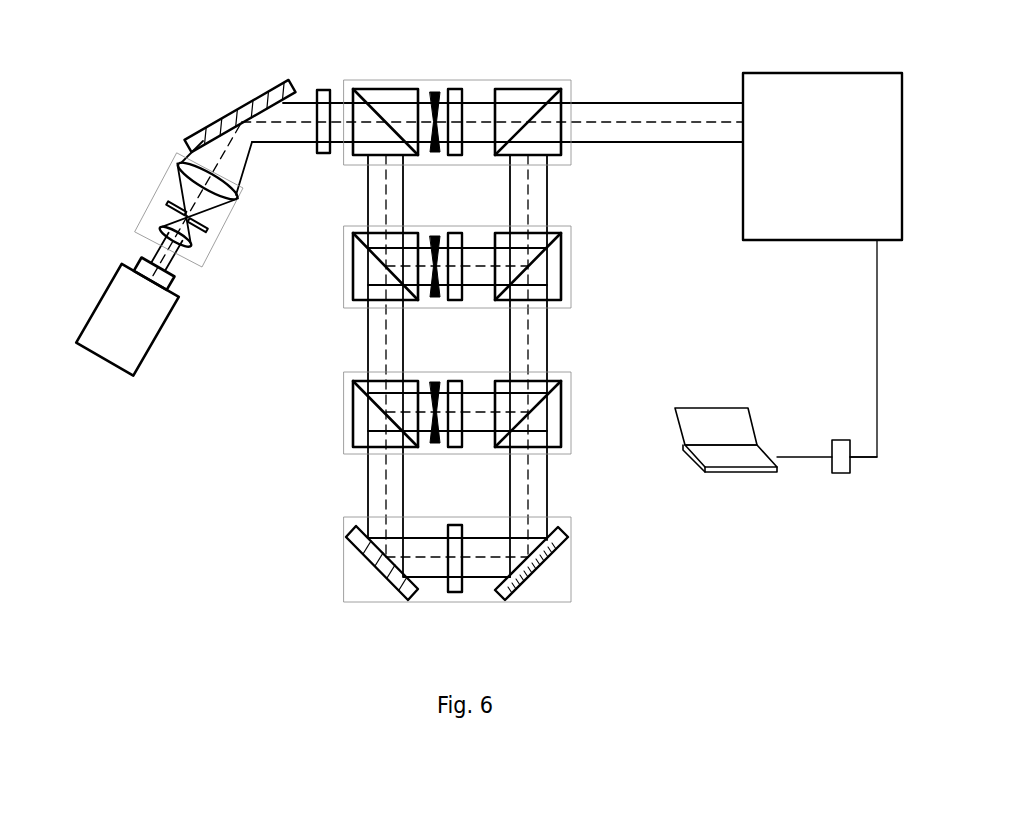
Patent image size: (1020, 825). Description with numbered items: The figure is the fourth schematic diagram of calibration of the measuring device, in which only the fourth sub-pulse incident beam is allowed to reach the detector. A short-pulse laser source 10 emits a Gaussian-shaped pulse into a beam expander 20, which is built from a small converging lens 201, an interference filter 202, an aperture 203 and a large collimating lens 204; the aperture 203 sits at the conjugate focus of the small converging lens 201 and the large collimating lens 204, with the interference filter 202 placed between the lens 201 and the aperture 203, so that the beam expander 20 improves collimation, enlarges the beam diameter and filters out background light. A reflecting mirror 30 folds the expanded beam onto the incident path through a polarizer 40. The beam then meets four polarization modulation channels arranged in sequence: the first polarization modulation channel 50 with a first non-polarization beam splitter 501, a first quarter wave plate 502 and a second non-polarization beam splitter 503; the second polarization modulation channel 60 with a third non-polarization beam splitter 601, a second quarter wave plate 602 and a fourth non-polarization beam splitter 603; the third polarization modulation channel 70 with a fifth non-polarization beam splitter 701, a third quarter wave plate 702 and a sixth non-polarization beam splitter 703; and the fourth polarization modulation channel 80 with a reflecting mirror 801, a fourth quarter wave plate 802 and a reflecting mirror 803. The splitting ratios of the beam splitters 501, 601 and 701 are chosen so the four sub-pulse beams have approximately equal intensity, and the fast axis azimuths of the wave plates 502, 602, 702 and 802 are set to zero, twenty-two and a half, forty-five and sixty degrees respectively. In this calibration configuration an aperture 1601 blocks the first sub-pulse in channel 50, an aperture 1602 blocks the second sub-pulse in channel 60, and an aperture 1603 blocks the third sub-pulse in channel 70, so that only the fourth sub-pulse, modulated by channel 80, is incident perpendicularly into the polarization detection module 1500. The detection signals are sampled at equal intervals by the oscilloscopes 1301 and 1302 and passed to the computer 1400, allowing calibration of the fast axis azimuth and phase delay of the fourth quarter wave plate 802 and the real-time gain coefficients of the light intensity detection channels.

The short-pulse laser source 10 is at (107, 312).
The beam expander 20 is at (193, 257).
The small converging lens 201 is at (160, 228).
The interference filter 202 is at (167, 209).
The aperture 203 is at (172, 205).
The large collimating lens 204 is at (180, 158).
The reflecting mirror 30 is at (225, 117).
The polarizer 40 is at (322, 87).
The first polarization modulation channel 50 is at (372, 83).
The first non-polarization beam splitter 501 is at (385, 97).
The aperture 1601 is at (433, 93).
The first ¼ wave plate 502 is at (463, 93).
The second non-polarization beam splitter 503 is at (547, 93).
The second polarization modulation channel 60 is at (348, 258).
The third non-polarization beam splitter 601 is at (360, 287).
The aperture 1602 is at (433, 235).
The second ¼ wave plate 602 is at (457, 282).
The fourth non-polarization beam splitter 603 is at (552, 292).
The third polarization modulation channel 70 is at (350, 375).
The fifth non-polarization beam splitter 701 is at (358, 427).
The aperture 1603 is at (433, 443).
The third ¼ wave plate 702 is at (460, 430).
The sixth non-polarization beam splitter 703 is at (558, 427).
The fourth polarization modulation channel 80 is at (352, 560).
The reflecting mirror 801 is at (397, 587).
The fourth ¼ wave plate 802 is at (452, 592).
The reflecting mirror 803 is at (522, 598).
The polarization detection module 1500 is at (823, 219).
The computer 1400 is at (740, 423).
The oscilloscope 1301 is at (845, 450).
The oscilloscope 1302 is at (833, 467).